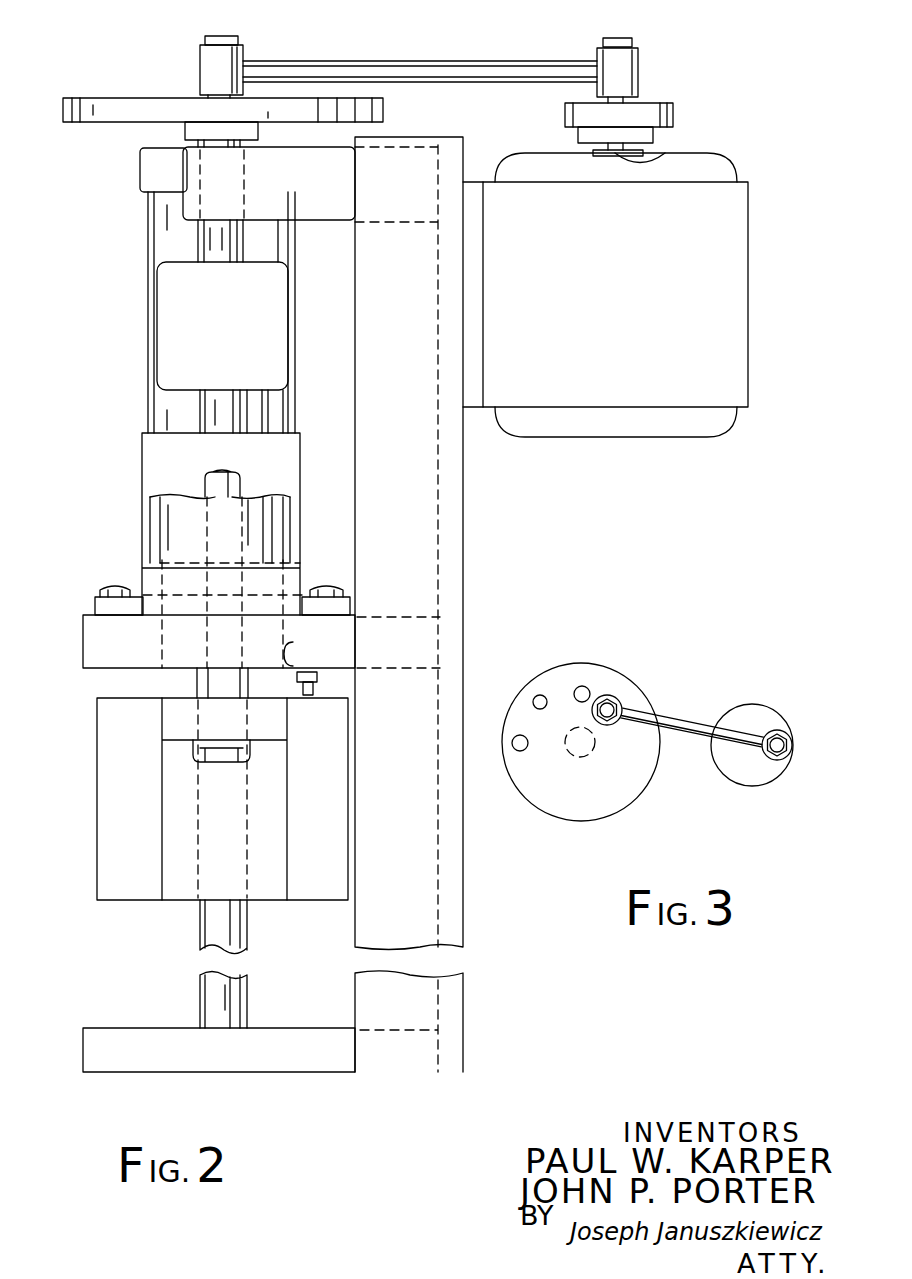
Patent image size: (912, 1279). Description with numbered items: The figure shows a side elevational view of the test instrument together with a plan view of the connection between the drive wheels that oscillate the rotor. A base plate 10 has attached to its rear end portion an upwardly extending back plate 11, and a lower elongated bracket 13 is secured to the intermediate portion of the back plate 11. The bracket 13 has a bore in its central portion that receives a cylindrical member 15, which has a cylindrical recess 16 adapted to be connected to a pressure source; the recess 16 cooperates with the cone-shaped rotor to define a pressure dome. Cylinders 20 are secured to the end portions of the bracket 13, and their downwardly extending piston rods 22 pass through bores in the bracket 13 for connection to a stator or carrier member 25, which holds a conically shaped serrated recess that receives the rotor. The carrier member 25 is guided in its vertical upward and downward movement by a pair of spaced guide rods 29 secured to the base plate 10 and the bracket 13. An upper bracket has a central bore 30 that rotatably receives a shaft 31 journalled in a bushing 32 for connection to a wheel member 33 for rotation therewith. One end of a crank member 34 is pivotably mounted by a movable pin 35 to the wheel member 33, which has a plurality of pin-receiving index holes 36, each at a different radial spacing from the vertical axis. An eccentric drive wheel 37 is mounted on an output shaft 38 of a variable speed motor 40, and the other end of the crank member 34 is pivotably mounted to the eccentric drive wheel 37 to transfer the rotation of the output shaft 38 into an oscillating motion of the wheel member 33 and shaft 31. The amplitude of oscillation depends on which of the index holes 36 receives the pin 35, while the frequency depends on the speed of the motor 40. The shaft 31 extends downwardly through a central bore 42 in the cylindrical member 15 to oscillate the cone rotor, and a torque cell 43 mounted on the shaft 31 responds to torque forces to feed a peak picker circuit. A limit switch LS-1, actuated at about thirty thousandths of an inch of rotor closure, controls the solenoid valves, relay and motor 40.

In FIG. 2, the base plate 10 is at (100, 1050).
In FIG. 2, the back plate 11 is at (463, 548).
In FIG. 2, the lower elongated bracket 13 is at (92, 645).
In FIG. 2, the cylindrical member 15 is at (157, 450).
In FIG. 2, the cylindrical recess 16 is at (165, 572).
In FIG. 2, the cylinders 20 is at (163, 213).
In FIG. 2, the piston rods 22 is at (215, 487).
In FIG. 2, the carrier member 25 is at (105, 845).
In FIG. 2, the guide rods 29 is at (215, 935).
In FIG. 2, the central bore 30 is at (249, 171).
In FIG. 2, the shaft 31 is at (220, 240).
In FIG. 3, the shaft 31 is at (566, 757).
In FIG. 2, the bushing 32 is at (200, 130).
In FIG. 2, the wheel member 33 is at (108, 105).
In FIG. 3, the wheel member 33 is at (585, 672).
In FIG. 2, the crank member 34 is at (440, 70).
In FIG. 3, the crank member 34 is at (667, 728).
In FIG. 2, the movable pin 35 is at (215, 36).
In FIG. 3, the pin-receiving index holes 36 is at (582, 686).
In FIG. 2, the eccentric drive wheel 37 is at (632, 113).
In FIG. 3, the eccentric drive wheel 37 is at (748, 717).
In FIG. 2, the output shaft 38 is at (660, 152).
In FIG. 3, the output shaft 38 is at (760, 752).
In FIG. 2, the variable speed motor 40 is at (740, 218).
In FIG. 2, the central bore 42 is at (190, 173).
In FIG. 2, the torque cell 43 is at (168, 333).
In FIG. 2, the limit switch LS-1 is at (314, 666).